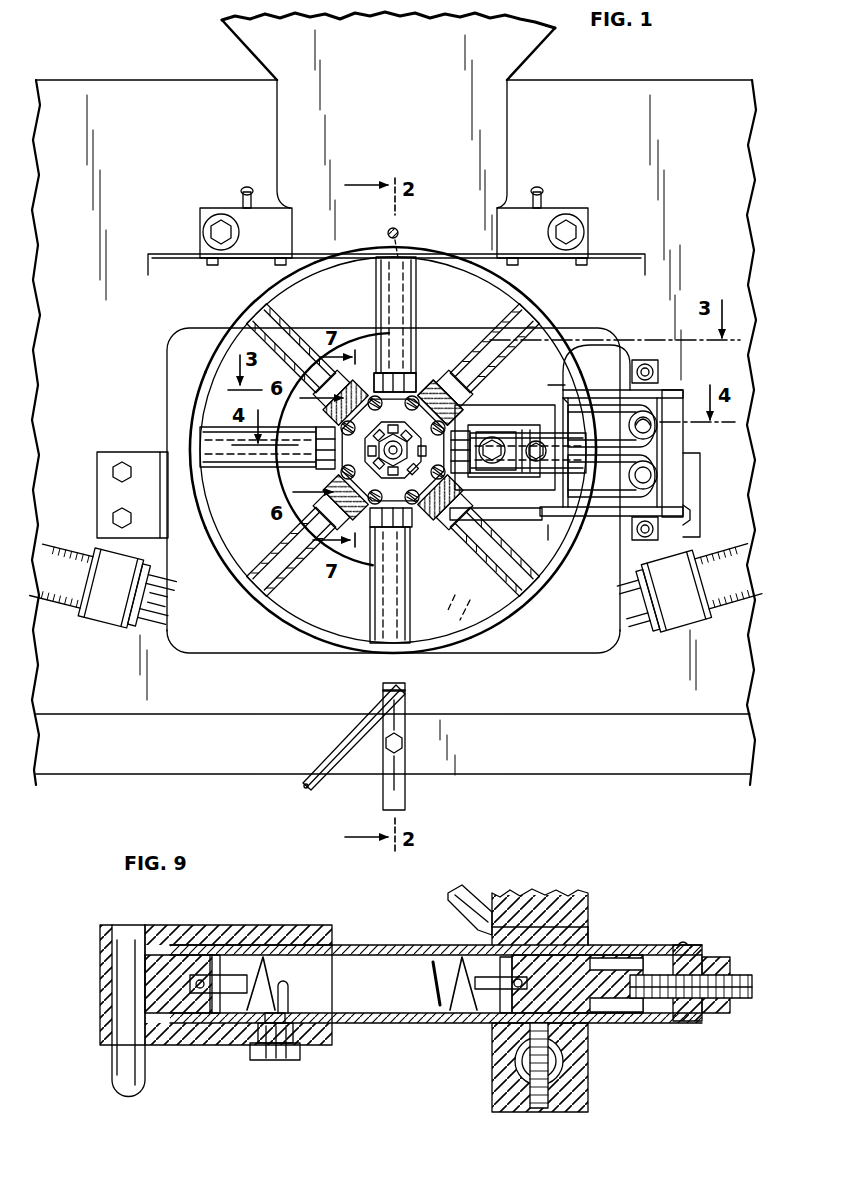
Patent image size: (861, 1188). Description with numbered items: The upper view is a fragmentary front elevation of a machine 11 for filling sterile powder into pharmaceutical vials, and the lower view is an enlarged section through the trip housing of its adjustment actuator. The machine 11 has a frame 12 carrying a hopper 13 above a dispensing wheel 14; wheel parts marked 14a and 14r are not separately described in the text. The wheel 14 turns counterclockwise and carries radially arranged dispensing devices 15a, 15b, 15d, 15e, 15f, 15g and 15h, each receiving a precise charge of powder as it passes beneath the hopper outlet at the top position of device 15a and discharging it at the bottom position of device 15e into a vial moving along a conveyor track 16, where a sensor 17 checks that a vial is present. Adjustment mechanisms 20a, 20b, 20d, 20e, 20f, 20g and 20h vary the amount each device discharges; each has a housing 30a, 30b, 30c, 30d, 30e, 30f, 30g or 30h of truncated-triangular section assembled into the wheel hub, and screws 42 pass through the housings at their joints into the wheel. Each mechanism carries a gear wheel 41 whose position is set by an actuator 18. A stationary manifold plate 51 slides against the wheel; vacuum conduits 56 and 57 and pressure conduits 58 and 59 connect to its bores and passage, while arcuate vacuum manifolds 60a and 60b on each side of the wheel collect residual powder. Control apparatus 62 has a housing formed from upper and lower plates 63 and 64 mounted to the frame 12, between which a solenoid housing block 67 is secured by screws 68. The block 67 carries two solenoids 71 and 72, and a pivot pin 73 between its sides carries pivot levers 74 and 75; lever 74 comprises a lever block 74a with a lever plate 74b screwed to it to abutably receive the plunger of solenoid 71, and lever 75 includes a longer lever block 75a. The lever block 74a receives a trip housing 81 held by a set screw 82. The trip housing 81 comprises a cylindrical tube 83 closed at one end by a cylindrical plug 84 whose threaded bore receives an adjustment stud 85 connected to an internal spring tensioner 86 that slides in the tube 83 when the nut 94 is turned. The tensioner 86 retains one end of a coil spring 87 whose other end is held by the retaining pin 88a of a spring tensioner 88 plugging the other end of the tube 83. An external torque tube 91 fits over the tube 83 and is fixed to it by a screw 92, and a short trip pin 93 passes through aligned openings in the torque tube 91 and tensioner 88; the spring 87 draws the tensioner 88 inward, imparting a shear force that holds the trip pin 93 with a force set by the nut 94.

In FIG. 1, the machine 11 is at (130, 62).
In FIG. 1, the frame 12 is at (72, 105).
In FIG. 1, the hopper 13 is at (262, 32).
In FIG. 1, the dispensing wheel 14 is at (165, 380).
In FIG. 1, the mounting bracket 14r is at (300, 272).
In FIG. 1, the wheel ring 14a is at (372, 270).
In FIG. 1, the dispensing device 15a is at (428, 278).
In FIG. 1, the dispensing device 15b is at (515, 325).
In FIG. 1, the dispensing device 15d is at (525, 575).
In FIG. 1, the dispensing device 15e is at (410, 645).
In FIG. 1, the dispensing device 15f is at (262, 585).
In FIG. 1, the dispensing device 15g is at (205, 430).
In FIG. 1, the dispensing device 15h is at (268, 322).
In FIG. 1, the conveyor track 16 is at (690, 770).
In FIG. 1, the sensor 17 is at (383, 690).
In FIG. 1, the actuator 18 is at (548, 525).
In FIG. 1, the adjustment mechanism 20a is at (410, 365).
In FIG. 1, the adjustment mechanism 20b is at (430, 390).
In FIG. 1, the adjustment mechanism 20d is at (460, 512).
In FIG. 1, the adjustment mechanism 20e is at (412, 545).
In FIG. 1, the adjustment mechanism 20f is at (335, 510).
In FIG. 1, the adjustment mechanism 20g is at (328, 470).
In FIG. 1, the adjustment mechanism 20h is at (325, 380).
In FIG. 1, the housing 30a is at (378, 330).
In FIG. 1, the housing 30b is at (460, 335).
In FIG. 1, the housing 30c is at (470, 480).
In FIG. 1, the housing 30d is at (438, 540).
In FIG. 1, the housing 30e is at (372, 555).
In FIG. 1, the housing 30f is at (335, 528).
In FIG. 1, the housing 30g is at (300, 441).
In FIG. 1, the housing 30h is at (345, 360).
In FIG. 1, the gear wheel 41 is at (393, 373).
In FIG. 1, the screws 42 is at (450, 397).
In FIG. 1, the manifold plate 51 is at (448, 548).
In FIG. 1, the first conduit 56 is at (400, 238).
In FIG. 1, the second conduit 57 is at (292, 300).
In FIG. 1, the conduit 58 is at (383, 685).
In FIG. 1, the conduit 59 is at (515, 592).
In FIG. 1, the vacuum manifold 60a is at (240, 652).
In FIG. 1, the vacuum manifold 60b is at (592, 652).
In FIG. 1, the control apparatus 62 is at (605, 518).
In FIG. 1, the upper plate 63 is at (672, 393).
In FIG. 1, the lower plate 64 is at (396, 587).
In FIG. 1, the solenoid housing block 67 is at (570, 392).
In FIG. 1, the screws 68 is at (563, 388).
In FIG. 1, the solenoid 71 is at (650, 448).
In FIG. 1, the solenoid 72 is at (648, 492).
In FIG. 9, the pivot pin 73 is at (522, 1066).
In FIG. 1, the pivot lever 74 is at (496, 428).
In FIG. 9, the pivot lever 74 is at (592, 1098).
In FIG. 9, the lever block 74a is at (495, 1110).
In FIG. 9, the lever plate 74b is at (452, 888).
In FIG. 1, the pivot lever 75 is at (532, 418).
In FIG. 9, the pivot lever 75 is at (540, 888).
In FIG. 9, the lever block 75a is at (590, 892).
In FIG. 9, the trip housing 81 is at (400, 1027).
In FIG. 9, the set screw 82 is at (540, 1110).
In FIG. 9, the cylindrical tube 83 is at (372, 1025).
In FIG. 9, the cylindrical plug 84 is at (685, 942).
In FIG. 9, the threaded adjustment stud 85 is at (745, 970).
In FIG. 9, the spring tensioner 86 is at (575, 968).
In FIG. 9, the coil spring 87 is at (440, 958).
In FIG. 9, the spring tensioner 88 is at (157, 940).
In FIG. 9, the retaining pin 88a is at (216, 950).
In FIG. 9, the torque tube 91 is at (318, 925).
In FIG. 9, the screw 92 is at (280, 1062).
In FIG. 9, the trip pin 93 is at (148, 1072).
In FIG. 9, the adjustment nut 94 is at (716, 952).